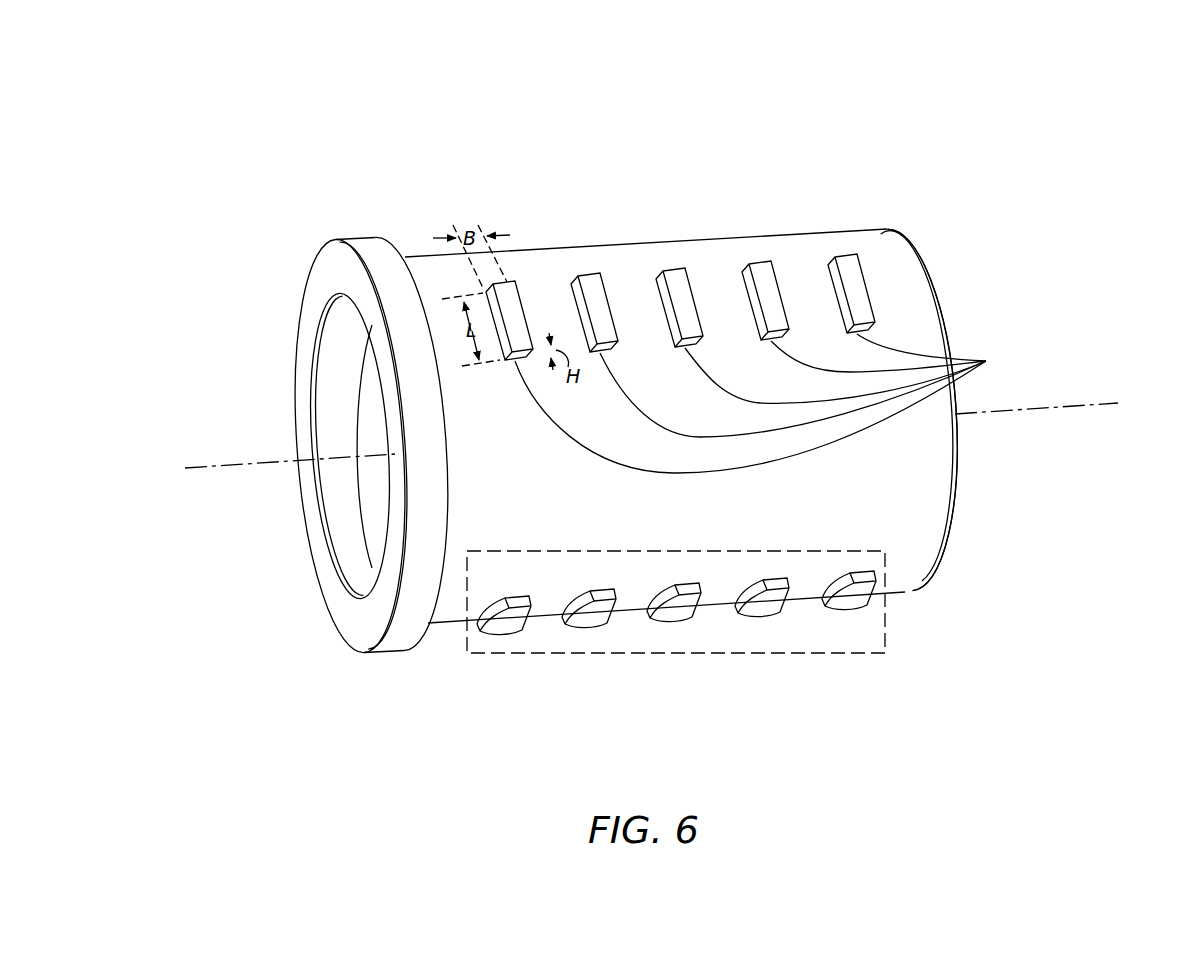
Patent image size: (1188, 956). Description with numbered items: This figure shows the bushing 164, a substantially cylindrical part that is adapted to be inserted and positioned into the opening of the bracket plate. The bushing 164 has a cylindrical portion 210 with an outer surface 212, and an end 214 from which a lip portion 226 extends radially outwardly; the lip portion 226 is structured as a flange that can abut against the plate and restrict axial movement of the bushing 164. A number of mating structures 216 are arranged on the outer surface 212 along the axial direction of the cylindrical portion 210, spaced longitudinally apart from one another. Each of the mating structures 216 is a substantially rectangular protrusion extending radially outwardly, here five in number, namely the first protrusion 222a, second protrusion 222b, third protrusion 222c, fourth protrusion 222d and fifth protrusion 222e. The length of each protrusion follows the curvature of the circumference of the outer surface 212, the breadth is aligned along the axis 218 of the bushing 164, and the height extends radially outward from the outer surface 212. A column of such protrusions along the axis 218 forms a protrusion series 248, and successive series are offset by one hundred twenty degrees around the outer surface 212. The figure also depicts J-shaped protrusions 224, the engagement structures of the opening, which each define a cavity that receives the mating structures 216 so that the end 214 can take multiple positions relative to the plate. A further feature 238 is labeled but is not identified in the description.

The bushing 164 is at (1078, 146).
The cylindrical portion 210 is at (835, 242).
The outer surface 212 is at (745, 240).
The end 214 is at (315, 288).
The mating structures 216 is at (890, 601).
The axis 218 is at (224, 462).
The first protrusion 222a is at (526, 292).
The second protrusion 222b is at (606, 293).
The third protrusion 222c is at (690, 290).
The fourth protrusion 222d is at (783, 283).
The fifth protrusion 222e is at (868, 276).
The J-shaped protrusion 224 is at (503, 632).
The lip portion 226 is at (329, 247).
The end wall 238 is at (938, 292).
The protrusion series 248 is at (885, 620).